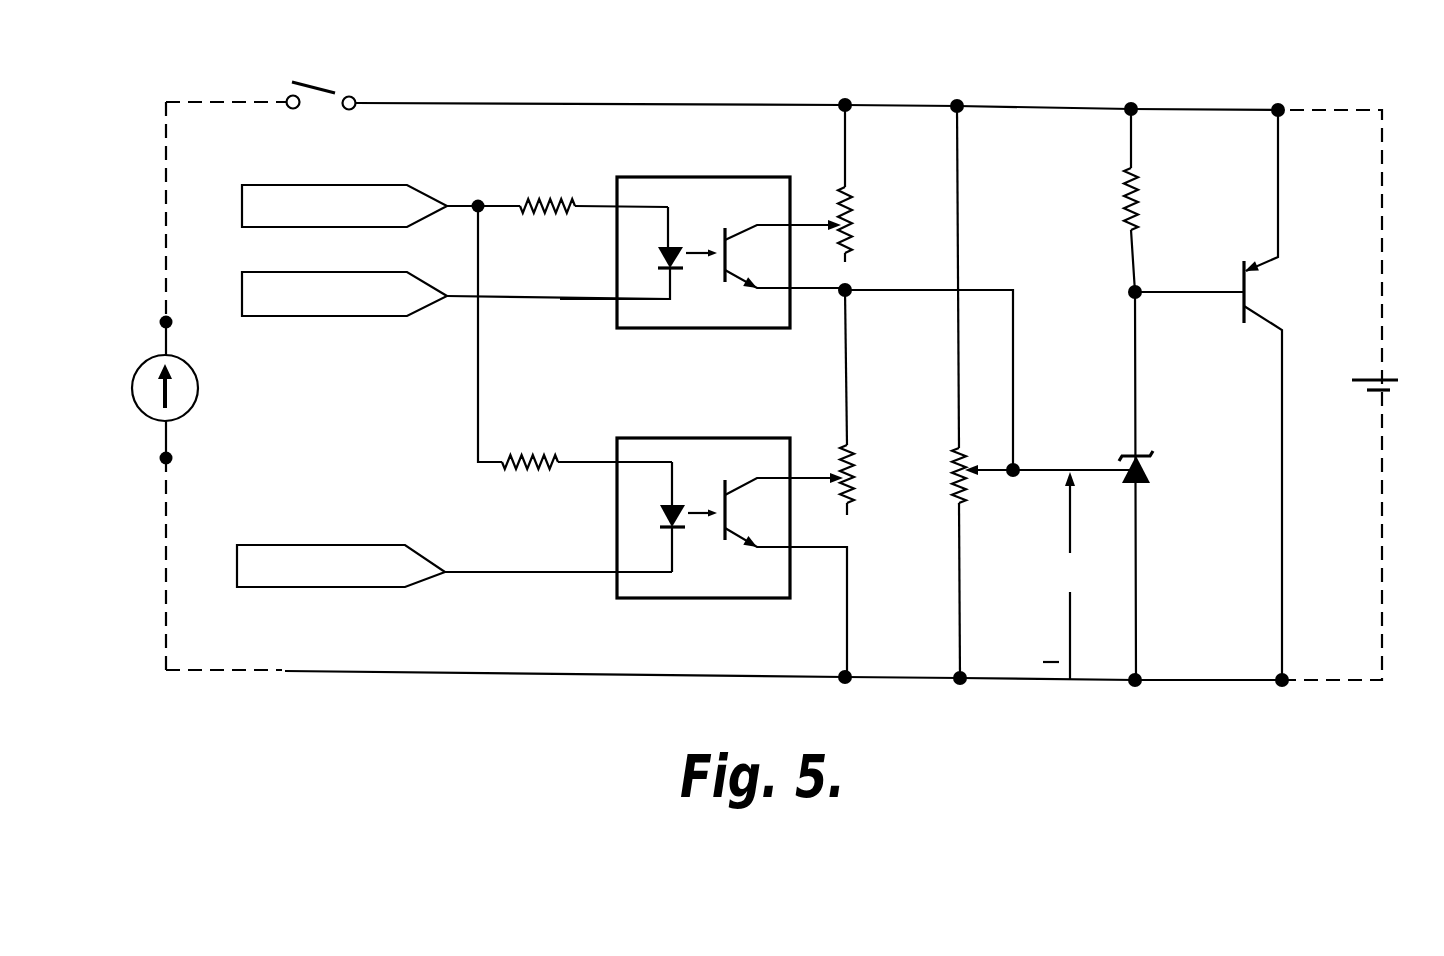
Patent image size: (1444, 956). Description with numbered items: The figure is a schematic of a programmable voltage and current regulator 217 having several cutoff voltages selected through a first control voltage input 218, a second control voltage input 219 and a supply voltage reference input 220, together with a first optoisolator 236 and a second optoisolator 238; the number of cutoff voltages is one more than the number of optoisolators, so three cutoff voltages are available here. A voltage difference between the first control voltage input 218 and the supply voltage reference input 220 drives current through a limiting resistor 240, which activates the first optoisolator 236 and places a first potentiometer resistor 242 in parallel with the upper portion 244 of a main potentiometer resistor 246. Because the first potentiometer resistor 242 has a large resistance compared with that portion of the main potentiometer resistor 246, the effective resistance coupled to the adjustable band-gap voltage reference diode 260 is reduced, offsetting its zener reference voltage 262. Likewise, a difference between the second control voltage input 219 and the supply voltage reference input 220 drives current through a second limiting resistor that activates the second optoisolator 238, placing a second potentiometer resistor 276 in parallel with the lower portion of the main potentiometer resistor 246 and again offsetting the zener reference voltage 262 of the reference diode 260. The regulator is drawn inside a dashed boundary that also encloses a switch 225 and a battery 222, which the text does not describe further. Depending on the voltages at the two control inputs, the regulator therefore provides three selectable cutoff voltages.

The programmable voltage and current regulator 217 is at (1152, 86).
The Control 1 voltage input 218 is at (277, 271).
The Control 2 voltage input 219 is at (327, 545).
The voltage reference input Vcc 220 is at (317, 185).
The battery B1 222 is at (1368, 377).
The switch S1 225 is at (335, 93).
The optoisolator U60 236 is at (655, 177).
The optoisolator U62 238 is at (653, 437).
The limiting resistor R5 240 is at (523, 203).
The potentiometer resistor R3 242 is at (850, 190).
The upper portion of potentiometer resistor R2 244 is at (948, 452).
The potentiometer resistor R2 246 is at (557, 470).
The adjustable band-gap voltage reference diode U1 260 is at (1125, 460).
The zener reference voltage VREF 262 is at (1047, 557).
The potentiometer resistor R4 276 is at (867, 509).